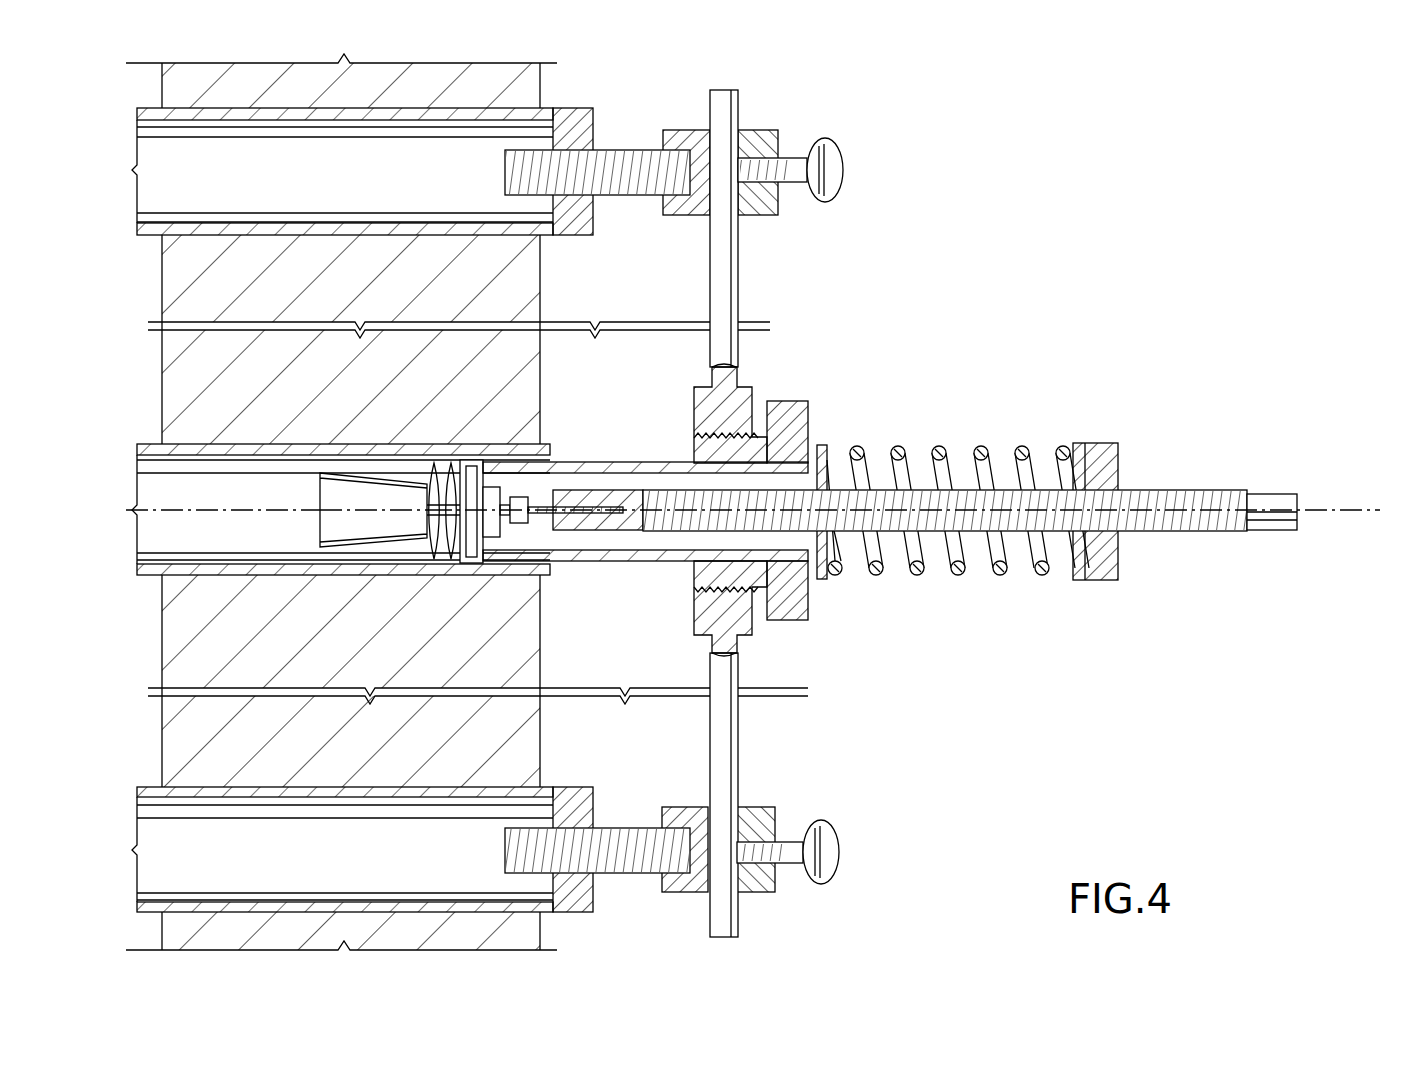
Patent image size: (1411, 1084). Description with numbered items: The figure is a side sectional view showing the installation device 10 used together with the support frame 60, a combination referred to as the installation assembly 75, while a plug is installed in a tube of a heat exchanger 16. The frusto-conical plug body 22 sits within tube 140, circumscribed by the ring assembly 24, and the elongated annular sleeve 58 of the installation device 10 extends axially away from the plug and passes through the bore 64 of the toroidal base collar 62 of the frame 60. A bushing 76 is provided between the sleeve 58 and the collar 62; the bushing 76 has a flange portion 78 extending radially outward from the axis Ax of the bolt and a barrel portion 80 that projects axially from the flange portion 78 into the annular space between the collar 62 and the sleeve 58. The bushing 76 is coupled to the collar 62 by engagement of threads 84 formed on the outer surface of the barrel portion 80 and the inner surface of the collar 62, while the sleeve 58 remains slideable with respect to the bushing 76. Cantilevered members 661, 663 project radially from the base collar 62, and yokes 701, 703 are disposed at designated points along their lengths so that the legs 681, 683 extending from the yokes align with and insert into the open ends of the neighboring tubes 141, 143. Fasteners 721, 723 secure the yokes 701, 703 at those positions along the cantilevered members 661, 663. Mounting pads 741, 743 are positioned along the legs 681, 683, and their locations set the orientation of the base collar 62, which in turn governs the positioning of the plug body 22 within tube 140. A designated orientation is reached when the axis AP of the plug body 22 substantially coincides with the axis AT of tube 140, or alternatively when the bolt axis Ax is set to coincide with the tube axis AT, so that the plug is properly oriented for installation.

The installation device 10 is at (943, 430).
The tube 141 is at (278, 237).
The tube 140 is at (267, 577).
The tube 143 is at (250, 788).
The heat exchanger 16 is at (739, 203).
The plug body 22 is at (370, 487).
The ring assembly 24 is at (471, 465).
The sleeve 58 is at (617, 462).
The support frame 60 is at (716, 203).
The base collar 62 is at (697, 387).
The bore 64 is at (695, 558).
The cantilevered member 661 is at (732, 278).
The cantilevered member 663 is at (728, 742).
The leg 681 is at (638, 150).
The leg 683 is at (632, 827).
The yoke 701 is at (780, 128).
The yoke 703 is at (767, 818).
The fastener 721 is at (835, 167).
The fastener 723 is at (835, 853).
The mounting pad 741 is at (590, 237).
The mounting pad 743 is at (593, 905).
The installation assembly 75 is at (967, 418).
The bushing 76 is at (958, 453).
The flange portion 78 is at (798, 420).
The barrel portion 80 is at (760, 440).
The threads 84 is at (708, 595).
The axis of tube AT is at (202, 510).
The axis of plug body AP is at (343, 512).
The axis of bolt Ax is at (1353, 508).